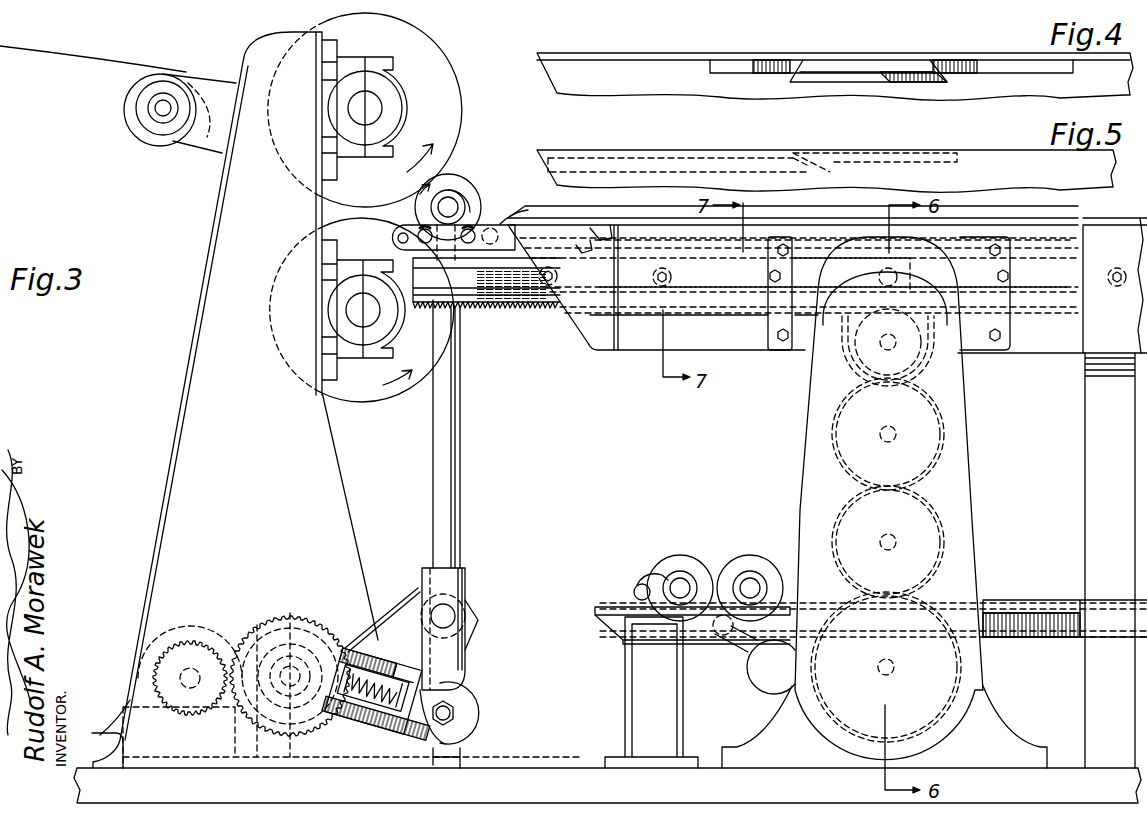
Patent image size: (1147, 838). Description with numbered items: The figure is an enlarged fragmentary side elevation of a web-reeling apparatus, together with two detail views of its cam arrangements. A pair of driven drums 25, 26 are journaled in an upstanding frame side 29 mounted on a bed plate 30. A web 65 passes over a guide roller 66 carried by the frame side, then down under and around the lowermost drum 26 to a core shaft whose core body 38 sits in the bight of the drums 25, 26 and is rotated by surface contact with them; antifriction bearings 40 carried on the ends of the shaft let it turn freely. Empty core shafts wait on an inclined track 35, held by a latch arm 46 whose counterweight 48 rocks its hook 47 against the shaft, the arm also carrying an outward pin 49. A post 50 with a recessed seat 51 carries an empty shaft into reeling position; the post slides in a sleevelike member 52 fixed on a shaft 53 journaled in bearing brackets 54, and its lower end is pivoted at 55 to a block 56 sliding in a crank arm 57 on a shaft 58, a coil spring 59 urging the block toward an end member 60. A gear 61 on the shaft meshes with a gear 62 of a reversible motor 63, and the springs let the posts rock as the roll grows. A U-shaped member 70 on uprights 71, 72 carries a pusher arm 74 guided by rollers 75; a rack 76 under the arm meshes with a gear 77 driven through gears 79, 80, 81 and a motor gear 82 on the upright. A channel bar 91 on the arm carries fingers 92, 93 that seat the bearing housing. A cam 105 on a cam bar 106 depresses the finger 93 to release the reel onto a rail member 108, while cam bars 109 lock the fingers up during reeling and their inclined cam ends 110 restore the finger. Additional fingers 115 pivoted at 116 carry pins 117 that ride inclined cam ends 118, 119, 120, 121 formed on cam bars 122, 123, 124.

In FIG. 3, the drum 25 is at (432, 50).
In FIG. 3, the drum 26 is at (388, 400).
In FIG. 3, the frame side 29 is at (200, 401).
In FIG. 3, the bed plate 30 is at (540, 766).
In FIG. 3, the track 35 is at (1030, 600).
In FIG. 3, the core body 38 is at (448, 176).
In FIG. 3, the antifriction bearing 40 is at (466, 182).
In FIG. 3, the arm 46 is at (733, 643).
In FIG. 3, the hook formation 47 is at (660, 578).
In FIG. 3, the counterweight 48 is at (758, 688).
In FIG. 3, the pin 49 is at (634, 590).
In FIG. 3, the post 50 is at (462, 430).
In FIG. 3, the recessed seat 51 is at (465, 200).
In FIG. 3, the sleevelike member 52 is at (467, 572).
In FIG. 3, the shaft 53 is at (467, 607).
In FIG. 3, the bearing bracket 54 is at (388, 605).
In FIG. 3, the pivot connection 55 is at (470, 712).
In FIG. 3, the block 56 is at (415, 752).
In FIG. 3, the crank arm 57 is at (362, 735).
In FIG. 3, the shaft 58 is at (292, 632).
In FIG. 3, the coil spring 59 is at (380, 672).
In FIG. 3, the end member 60 is at (470, 730).
In FIG. 3, the gear 61 is at (262, 630).
In FIG. 3, the gear 62 is at (188, 640).
In FIG. 3, the reversible electric motor 63 is at (132, 676).
In FIG. 3, the web 65 is at (44, 56).
In FIG. 3, the guide roller 66 is at (150, 147).
In FIG. 3, the U-shaped member 70 is at (730, 320).
In FIG. 4, the U-shaped member 70 is at (722, 96).
In FIG. 5, the U-shaped member 70 is at (826, 171).
In FIG. 3, the upright 71 is at (800, 430).
In FIG. 3, the upright 72 is at (1084, 452).
In FIG. 3, the pusher arm 74 is at (488, 300).
In FIG. 3, the roller 75 is at (673, 278).
In FIG. 3, the rack 76 is at (525, 310).
In FIG. 3, the gear 77 is at (915, 318).
In FIG. 3, the gear 79 is at (920, 362).
In FIG. 3, the gear 80 is at (940, 448).
In FIG. 3, the gear 81 is at (940, 532).
In FIG. 3, the gear 82 is at (960, 662).
In FIG. 3, the channel bar 91 is at (793, 204).
In FIG. 3, the finger 92 is at (410, 225).
In FIG. 3, the finger 93 is at (498, 224).
In FIG. 3, the cam 105 is at (792, 236).
In FIG. 5, the cam 105 is at (810, 157).
In FIG. 5, the cam bar 106 is at (912, 145).
In FIG. 3, the rail member 108 is at (1121, 224).
In FIG. 3, the cam bar 109 is at (680, 238).
In FIG. 5, the cam bar 109 is at (648, 158).
In FIG. 5, the cam end 110 is at (818, 168).
In FIG. 3, the finger 115 is at (582, 255).
In FIG. 3, the pivot 116 is at (616, 226).
In FIG. 3, the pin 117 is at (598, 232).
In FIG. 4, the cam end 118 is at (790, 62).
In FIG. 4, the cam end 119 is at (815, 72).
In FIG. 4, the cam end 120 is at (930, 70).
In FIG. 4, the cam end 121 is at (950, 62).
In FIG. 4, the cam bar 122 is at (738, 62).
In FIG. 4, the cam bar 123 is at (880, 82).
In FIG. 4, the cam bar 124 is at (1016, 72).